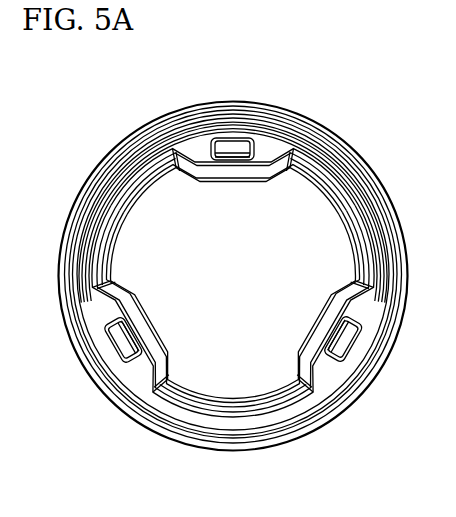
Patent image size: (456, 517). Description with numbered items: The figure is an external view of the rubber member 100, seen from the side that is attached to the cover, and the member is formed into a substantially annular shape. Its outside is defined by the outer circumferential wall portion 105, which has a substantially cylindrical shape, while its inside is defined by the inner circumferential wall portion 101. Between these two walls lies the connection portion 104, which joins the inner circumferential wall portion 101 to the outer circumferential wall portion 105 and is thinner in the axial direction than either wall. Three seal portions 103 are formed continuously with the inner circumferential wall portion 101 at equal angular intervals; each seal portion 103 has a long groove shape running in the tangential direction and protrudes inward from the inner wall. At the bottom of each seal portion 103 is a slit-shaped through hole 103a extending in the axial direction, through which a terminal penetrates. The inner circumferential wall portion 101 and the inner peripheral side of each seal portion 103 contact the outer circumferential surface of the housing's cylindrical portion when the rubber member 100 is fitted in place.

The rubber member 100 is at (369, 153).
The inner circumferential wall portion 101 is at (125, 210).
The seal portion 103 is at (278, 150).
The through hole 103a is at (235, 152).
The connection portion 104 is at (114, 186).
The outer circumferential wall portion 105 is at (78, 208).